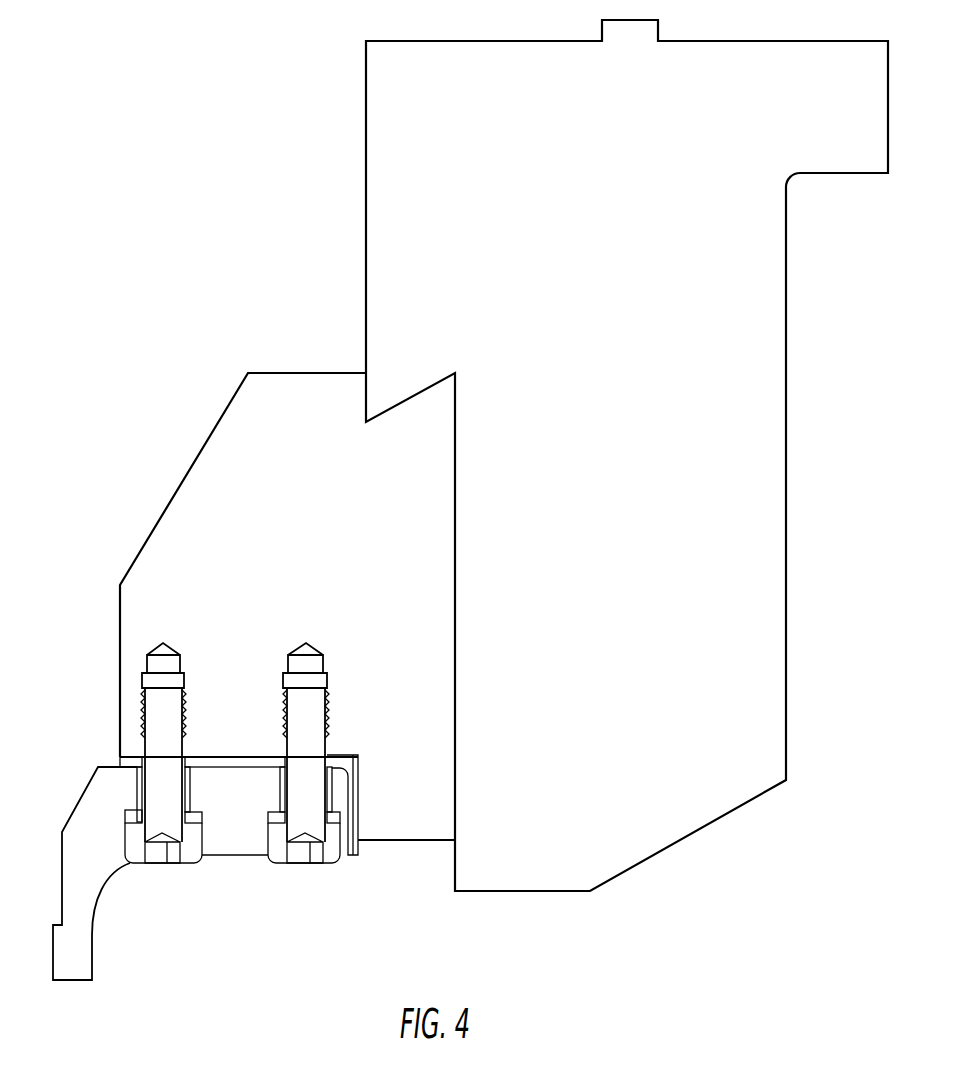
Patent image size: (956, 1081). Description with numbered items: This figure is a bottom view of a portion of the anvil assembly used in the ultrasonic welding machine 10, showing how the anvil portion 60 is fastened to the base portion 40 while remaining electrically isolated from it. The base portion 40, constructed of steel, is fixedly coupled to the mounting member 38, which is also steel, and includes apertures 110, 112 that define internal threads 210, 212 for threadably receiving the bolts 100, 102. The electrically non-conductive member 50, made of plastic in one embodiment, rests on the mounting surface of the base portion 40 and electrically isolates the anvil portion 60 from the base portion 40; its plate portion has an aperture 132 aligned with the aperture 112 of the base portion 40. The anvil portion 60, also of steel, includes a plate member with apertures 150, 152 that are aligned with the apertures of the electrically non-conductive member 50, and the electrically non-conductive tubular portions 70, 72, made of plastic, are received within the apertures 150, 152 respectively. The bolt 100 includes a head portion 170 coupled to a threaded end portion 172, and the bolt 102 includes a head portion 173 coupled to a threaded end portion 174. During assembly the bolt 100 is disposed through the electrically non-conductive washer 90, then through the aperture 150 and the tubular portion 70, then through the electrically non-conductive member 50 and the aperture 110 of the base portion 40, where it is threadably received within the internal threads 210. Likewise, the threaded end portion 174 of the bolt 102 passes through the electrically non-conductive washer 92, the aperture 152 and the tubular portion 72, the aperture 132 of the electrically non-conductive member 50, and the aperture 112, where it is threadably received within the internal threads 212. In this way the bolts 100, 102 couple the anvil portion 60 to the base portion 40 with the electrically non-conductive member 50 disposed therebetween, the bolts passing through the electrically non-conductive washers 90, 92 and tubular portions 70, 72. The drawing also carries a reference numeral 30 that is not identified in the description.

The ultrasonic welding machine 10 is at (213, 150).
The plate 30 is at (182, 757).
The mounting member 38 is at (380, 148).
The base portion 40 is at (215, 463).
The electrically non-conductive member 50 is at (105, 762).
The anvil portion 60 is at (75, 840).
The electrically non-conductive tubular portion 70 is at (190, 797).
The electrically non-conductive tubular portion 72 is at (333, 792).
The electrically non-conductive washer 90 is at (195, 818).
The electrically non-conductive washer 92 is at (340, 818).
The bolt 100 is at (188, 866).
The bolt 102 is at (330, 866).
The aperture 110 is at (180, 728).
The aperture 112 is at (289, 738).
The aperture 132 is at (313, 755).
The aperture 150 is at (127, 816).
The aperture 152 is at (273, 818).
The head portion 170 is at (130, 850).
The threaded end portion 172 is at (143, 718).
The head portion 173 is at (342, 857).
The threaded end portion 174 is at (327, 731).
The internal threads 210 is at (183, 703).
The internal threads 212 is at (325, 701).